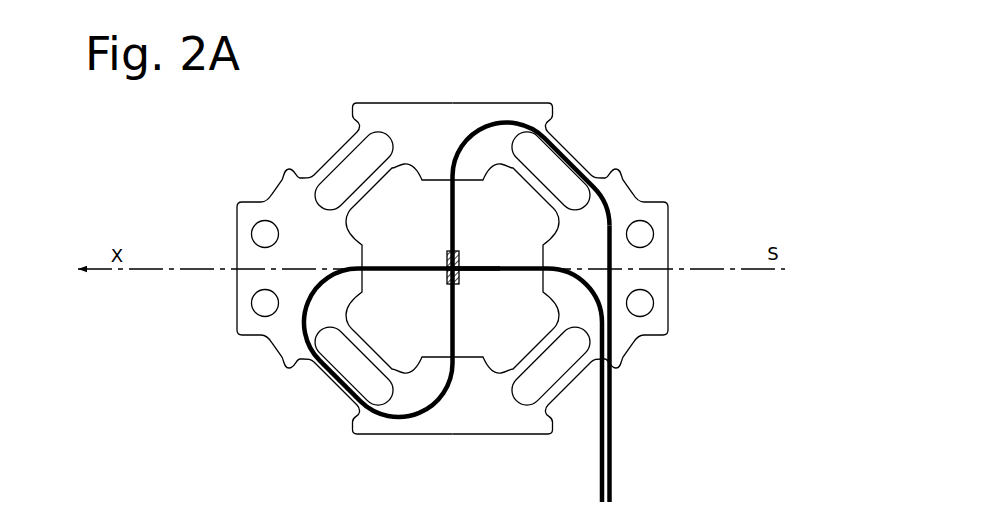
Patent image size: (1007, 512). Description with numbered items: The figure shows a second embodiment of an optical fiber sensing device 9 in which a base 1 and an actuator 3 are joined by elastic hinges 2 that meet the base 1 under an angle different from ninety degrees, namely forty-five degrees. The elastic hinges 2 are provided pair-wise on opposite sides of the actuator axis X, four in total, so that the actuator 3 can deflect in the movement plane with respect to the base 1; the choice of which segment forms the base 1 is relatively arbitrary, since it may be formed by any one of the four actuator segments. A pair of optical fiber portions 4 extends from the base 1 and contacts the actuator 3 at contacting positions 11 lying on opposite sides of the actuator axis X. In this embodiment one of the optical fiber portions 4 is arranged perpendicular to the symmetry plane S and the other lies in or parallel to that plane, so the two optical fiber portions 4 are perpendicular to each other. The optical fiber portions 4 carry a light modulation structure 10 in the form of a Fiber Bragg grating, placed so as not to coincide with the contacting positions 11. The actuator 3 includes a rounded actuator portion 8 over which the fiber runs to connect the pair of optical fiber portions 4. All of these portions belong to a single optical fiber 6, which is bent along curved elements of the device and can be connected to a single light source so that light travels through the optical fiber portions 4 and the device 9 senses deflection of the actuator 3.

The base 1 is at (653, 268).
The elastic hinge 2 is at (312, 162).
The actuator 3 is at (245, 283).
The pair of optical fiber portions 4 is at (456, 240).
The optical fiber 6 is at (612, 458).
The rounded actuator portion 8 is at (237, 318).
The optical fiber sensing device 9 is at (677, 322).
The light modulation structure 10 is at (447, 258).
The contacting position 11 is at (452, 167).